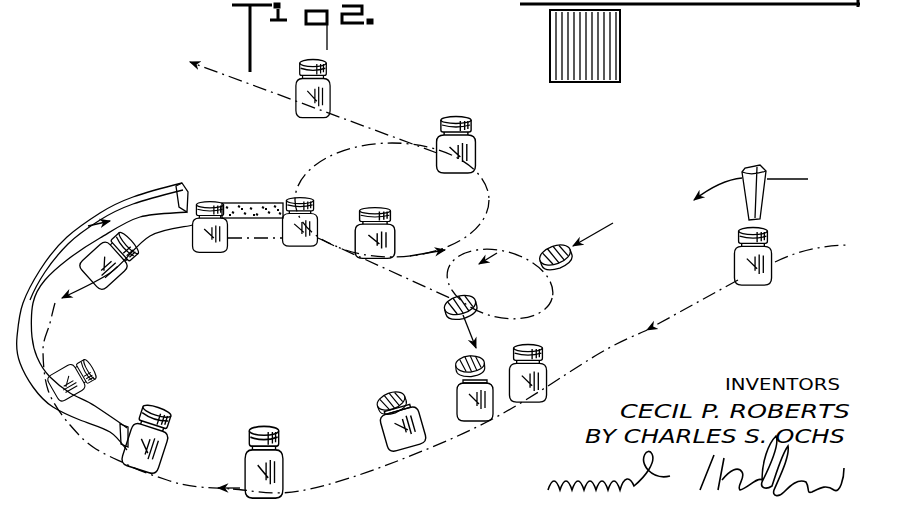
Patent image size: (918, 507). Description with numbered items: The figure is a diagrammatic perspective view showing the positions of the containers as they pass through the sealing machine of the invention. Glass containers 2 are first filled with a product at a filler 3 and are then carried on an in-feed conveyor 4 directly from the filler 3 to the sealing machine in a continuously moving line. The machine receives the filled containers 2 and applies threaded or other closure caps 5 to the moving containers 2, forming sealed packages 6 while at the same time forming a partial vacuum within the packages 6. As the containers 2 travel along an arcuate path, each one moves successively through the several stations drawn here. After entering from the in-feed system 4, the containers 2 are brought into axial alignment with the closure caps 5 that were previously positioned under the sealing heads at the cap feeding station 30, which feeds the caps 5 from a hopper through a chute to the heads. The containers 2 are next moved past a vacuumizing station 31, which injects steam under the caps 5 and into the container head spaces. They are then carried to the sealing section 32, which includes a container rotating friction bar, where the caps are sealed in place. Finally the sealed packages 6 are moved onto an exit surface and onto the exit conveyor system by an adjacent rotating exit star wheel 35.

The glass container 2 is at (745, 250).
The filler 3 is at (767, 200).
The in-feed conveyor 4 is at (705, 298).
The closure cap 5 is at (556, 244).
The sealed package 6 is at (320, 90).
The cap feeding station 30 is at (556, 290).
The vacuumizing station 31 is at (167, 184).
The sealing section 32 is at (262, 204).
The exit star wheel 35 is at (495, 200).